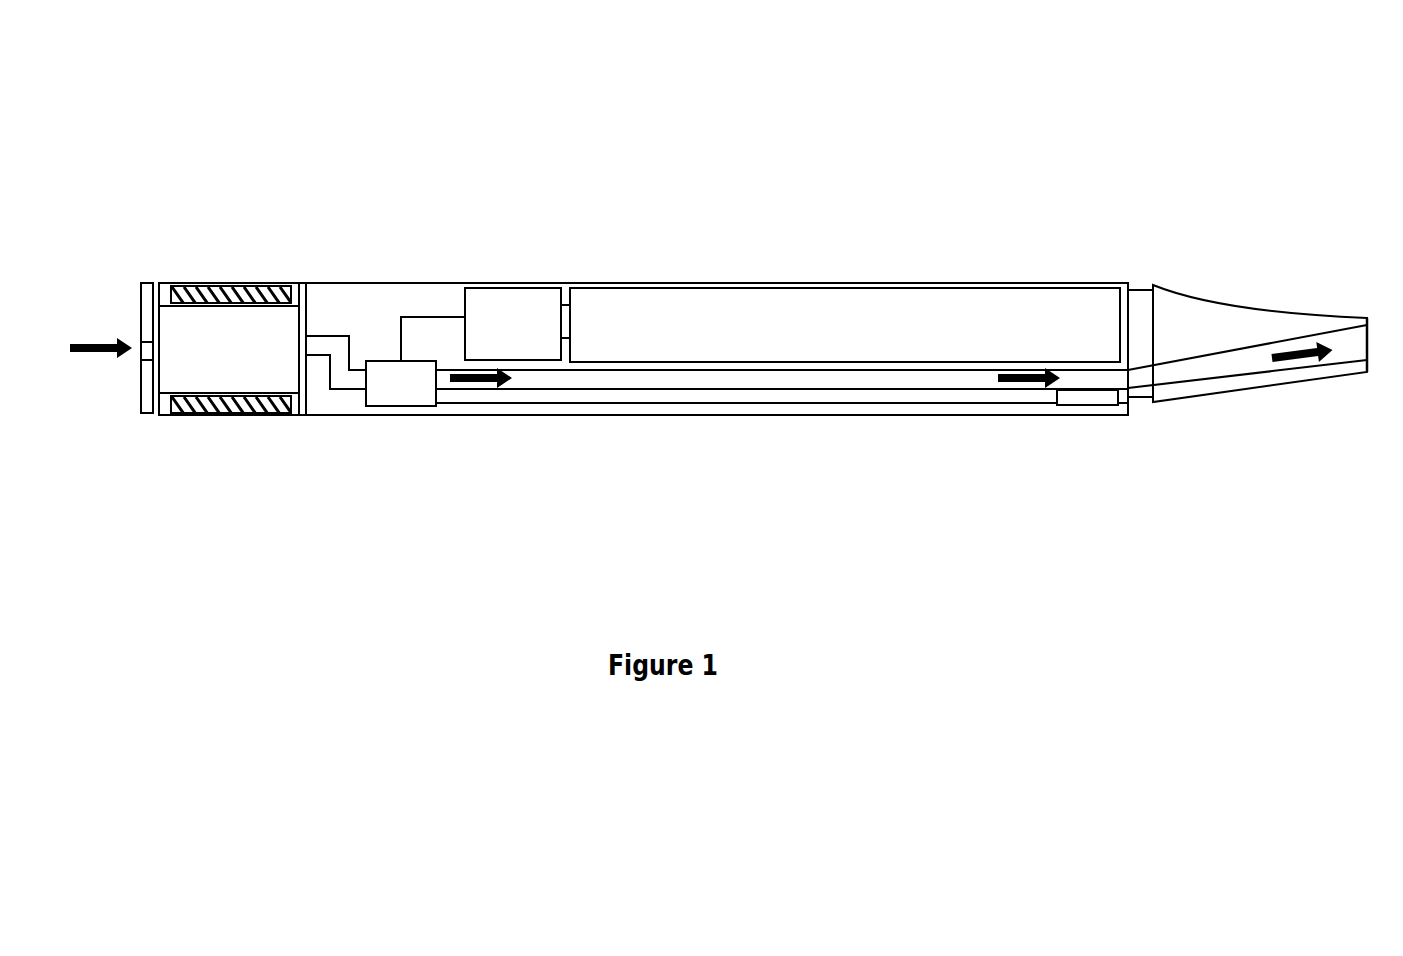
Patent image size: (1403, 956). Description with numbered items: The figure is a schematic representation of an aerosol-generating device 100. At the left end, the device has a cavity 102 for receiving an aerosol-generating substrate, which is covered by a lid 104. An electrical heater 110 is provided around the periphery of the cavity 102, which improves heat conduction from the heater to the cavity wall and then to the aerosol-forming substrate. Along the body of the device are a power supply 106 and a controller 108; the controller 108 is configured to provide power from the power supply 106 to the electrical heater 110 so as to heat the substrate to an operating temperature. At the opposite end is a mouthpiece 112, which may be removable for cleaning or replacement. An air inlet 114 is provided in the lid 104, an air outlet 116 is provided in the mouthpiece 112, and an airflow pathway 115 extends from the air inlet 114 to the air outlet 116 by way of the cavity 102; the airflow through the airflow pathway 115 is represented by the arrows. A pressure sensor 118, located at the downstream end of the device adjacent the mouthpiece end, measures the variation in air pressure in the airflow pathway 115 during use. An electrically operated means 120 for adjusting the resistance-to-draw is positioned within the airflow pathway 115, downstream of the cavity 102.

The aerosol-generating device 100 is at (763, 222).
The cavity 102 is at (246, 375).
The lid 104 is at (147, 294).
The power supply 106 is at (845, 325).
The controller 108 is at (517, 324).
The electrical heater 110 is at (257, 290).
The mouthpiece 112 is at (1241, 321).
The air inlet 114 is at (151, 341).
The airflow pathway 115 is at (711, 385).
The air outlet 116 is at (1362, 345).
The pressure sensor 118 is at (1100, 402).
The electrically operated means for adjusting the resistance-to-draw 120 is at (385, 361).